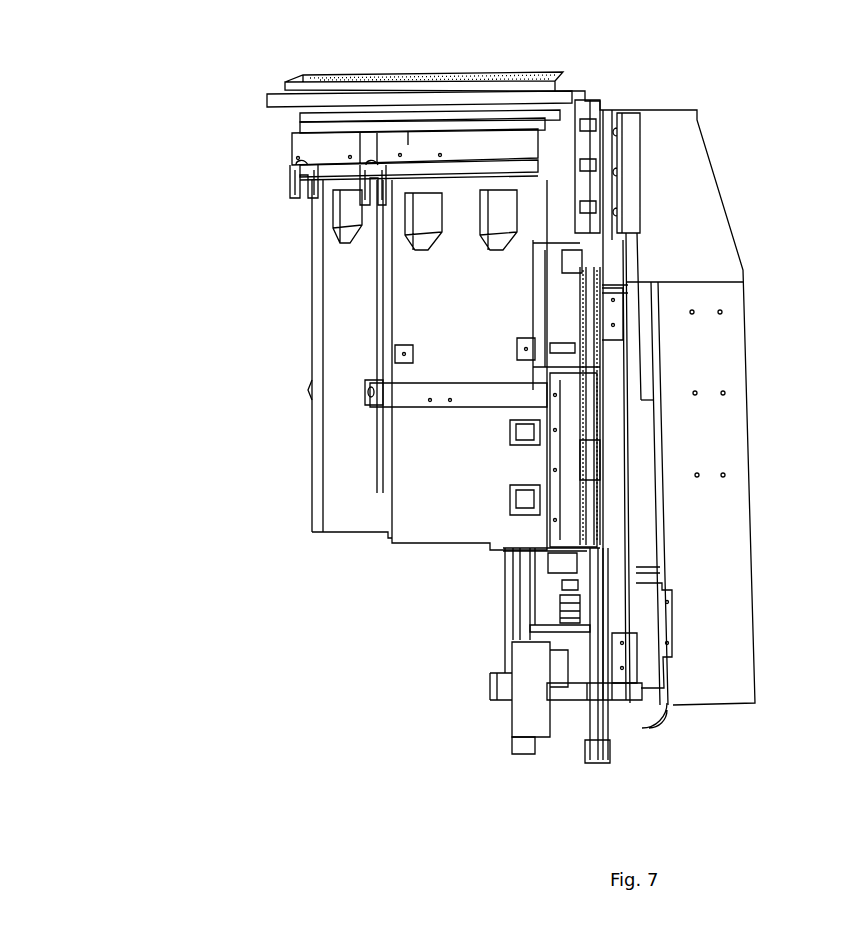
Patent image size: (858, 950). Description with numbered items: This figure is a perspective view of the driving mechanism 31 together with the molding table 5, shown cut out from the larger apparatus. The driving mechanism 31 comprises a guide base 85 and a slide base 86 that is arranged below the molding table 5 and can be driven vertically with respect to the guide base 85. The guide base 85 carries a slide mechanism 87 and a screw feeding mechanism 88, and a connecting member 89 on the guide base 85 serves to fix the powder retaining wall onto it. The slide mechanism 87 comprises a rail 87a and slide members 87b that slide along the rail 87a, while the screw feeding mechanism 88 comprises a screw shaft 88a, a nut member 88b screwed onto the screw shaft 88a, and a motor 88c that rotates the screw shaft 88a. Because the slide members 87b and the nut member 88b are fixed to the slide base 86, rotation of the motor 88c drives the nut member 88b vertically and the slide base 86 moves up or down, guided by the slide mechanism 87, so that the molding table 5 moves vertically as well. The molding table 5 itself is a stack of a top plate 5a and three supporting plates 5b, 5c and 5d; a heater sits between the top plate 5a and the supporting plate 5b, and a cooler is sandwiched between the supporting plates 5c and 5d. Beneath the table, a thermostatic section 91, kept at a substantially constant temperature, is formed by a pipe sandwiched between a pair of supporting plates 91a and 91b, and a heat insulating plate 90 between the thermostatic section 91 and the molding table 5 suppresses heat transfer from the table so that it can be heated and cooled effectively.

The molding table 5 is at (172, 57).
The top plate 5a is at (285, 88).
The supporting plate 5b is at (270, 101).
The supporting plate 5c is at (303, 113).
The supporting plate 5d is at (303, 127).
The heat insulating plate 90 is at (293, 146).
The thermostatic section 91 is at (300, 188).
The supporting plate 91a is at (486, 163).
The supporting plate 91b is at (408, 178).
The connecting member 89 is at (585, 148).
The guide base 85 is at (748, 602).
The slide base 86 is at (320, 512).
The screw shaft 88a is at (568, 308).
The nut member 88b is at (567, 352).
The slide member 87b is at (605, 412).
The screw feeding mechanism 88 is at (541, 591).
The rail 87a is at (585, 625).
The motor 88c is at (530, 665).
The slide mechanism 87 is at (494, 775).
The driving mechanism 31 is at (355, 602).